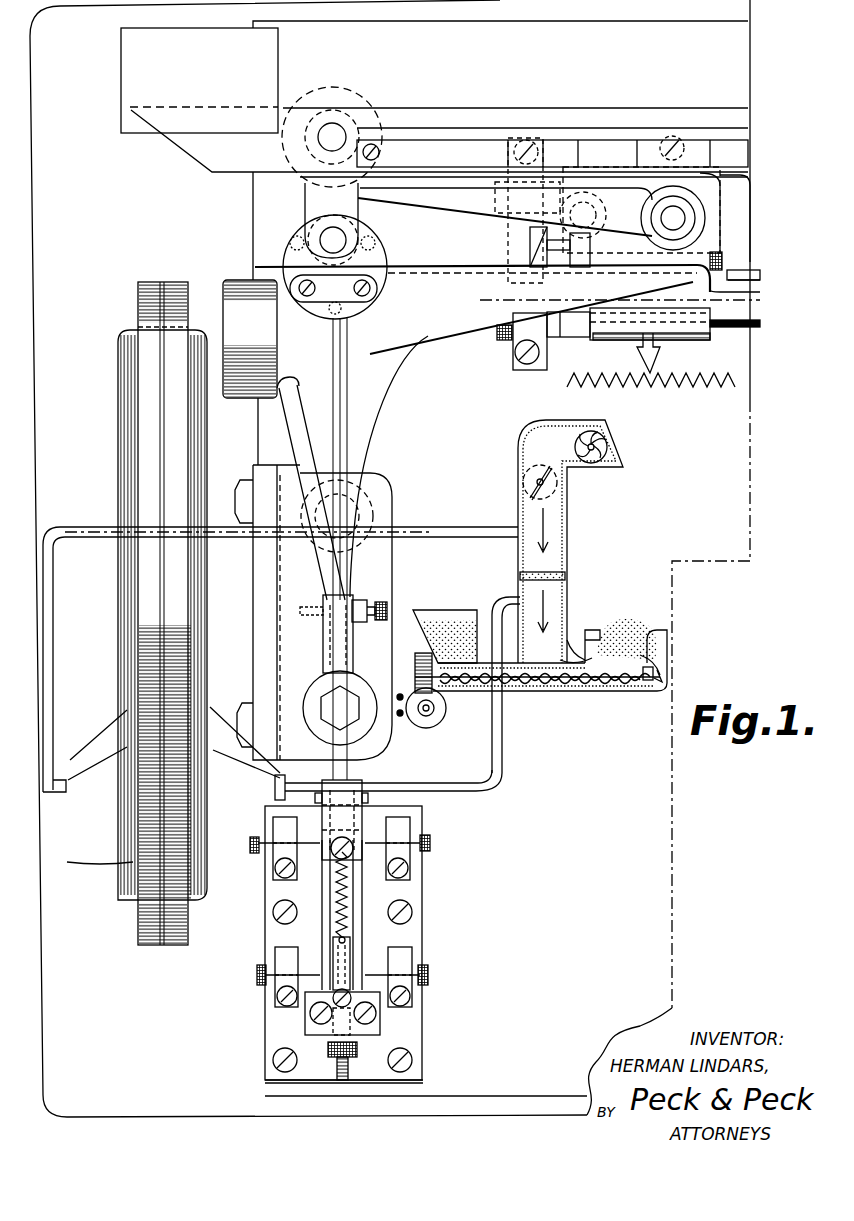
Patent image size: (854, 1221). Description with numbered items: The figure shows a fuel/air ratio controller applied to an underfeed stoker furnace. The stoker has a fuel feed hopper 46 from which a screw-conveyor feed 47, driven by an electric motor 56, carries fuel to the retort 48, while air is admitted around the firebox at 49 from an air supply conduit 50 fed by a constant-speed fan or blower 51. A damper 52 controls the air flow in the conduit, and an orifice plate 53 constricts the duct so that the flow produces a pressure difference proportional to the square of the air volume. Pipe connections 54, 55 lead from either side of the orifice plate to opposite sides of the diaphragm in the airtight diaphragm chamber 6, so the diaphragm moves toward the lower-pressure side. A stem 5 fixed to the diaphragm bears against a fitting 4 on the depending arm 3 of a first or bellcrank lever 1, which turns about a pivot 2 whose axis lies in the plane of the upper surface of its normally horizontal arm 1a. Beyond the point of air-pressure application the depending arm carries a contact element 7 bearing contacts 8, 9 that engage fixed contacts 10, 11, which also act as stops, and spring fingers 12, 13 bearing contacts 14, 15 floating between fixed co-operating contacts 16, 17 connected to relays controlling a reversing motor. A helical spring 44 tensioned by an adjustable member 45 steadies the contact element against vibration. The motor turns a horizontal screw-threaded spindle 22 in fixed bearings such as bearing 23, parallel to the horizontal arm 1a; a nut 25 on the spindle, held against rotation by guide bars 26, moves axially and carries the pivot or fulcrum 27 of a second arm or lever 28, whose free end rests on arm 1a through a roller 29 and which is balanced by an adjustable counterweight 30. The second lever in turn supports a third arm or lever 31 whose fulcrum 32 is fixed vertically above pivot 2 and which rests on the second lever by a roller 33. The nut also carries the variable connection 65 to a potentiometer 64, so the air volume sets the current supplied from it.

The first or bellcrank lever 1 is at (428, 336).
The horizontal arm of the lever 1a is at (575, 337).
The pivot 2 is at (320, 270).
The depending arm 3 is at (358, 472).
The fitting 4 is at (388, 606).
The stem 5 is at (303, 612).
The diaphragm chamber 6 is at (145, 598).
The contact element 7 is at (347, 800).
The contact 8 is at (280, 810).
The contact 9 is at (364, 840).
The fixed contact 10 is at (300, 835).
The fixed contact 11 is at (402, 838).
The spring finger 12 is at (328, 888).
The spring finger 13 is at (360, 915).
The contact 14 is at (322, 985).
The contact 15 is at (400, 962).
The fixed co-operating contact 16 is at (305, 960).
The fixed co-operating contact 17 is at (405, 965).
The screw-threaded spindle 22 is at (722, 262).
The fixed bearing 23 is at (512, 360).
The nut 25 is at (745, 309).
The guide bars 26 is at (740, 220).
The pivot or fulcrum 27 is at (676, 218).
The second arm or lever 28 is at (467, 198).
The roller 29 is at (308, 236).
The counterweight 30 is at (745, 280).
The third arm or lever 31 is at (427, 146).
The fulcrum 32 is at (334, 136).
The roller 33 is at (641, 165).
The helical spring 44 is at (339, 903).
The adjustable member 45 is at (345, 984).
The fuel feed hopper 46 is at (442, 618).
The screw-conveyor feed 47 is at (538, 680).
The retort 48 is at (650, 630).
The air admission 49 is at (589, 633).
The air supply conduit 50 is at (566, 500).
The fan or blower 51 is at (607, 447).
The damper 52 is at (525, 480).
The orifice plate 53 is at (561, 572).
The pipe connection 54 is at (462, 512).
The pipe connection 55 is at (501, 778).
The electric motor 56 is at (436, 714).
The potentiometer 64 is at (660, 378).
The variable connection 65 is at (640, 352).